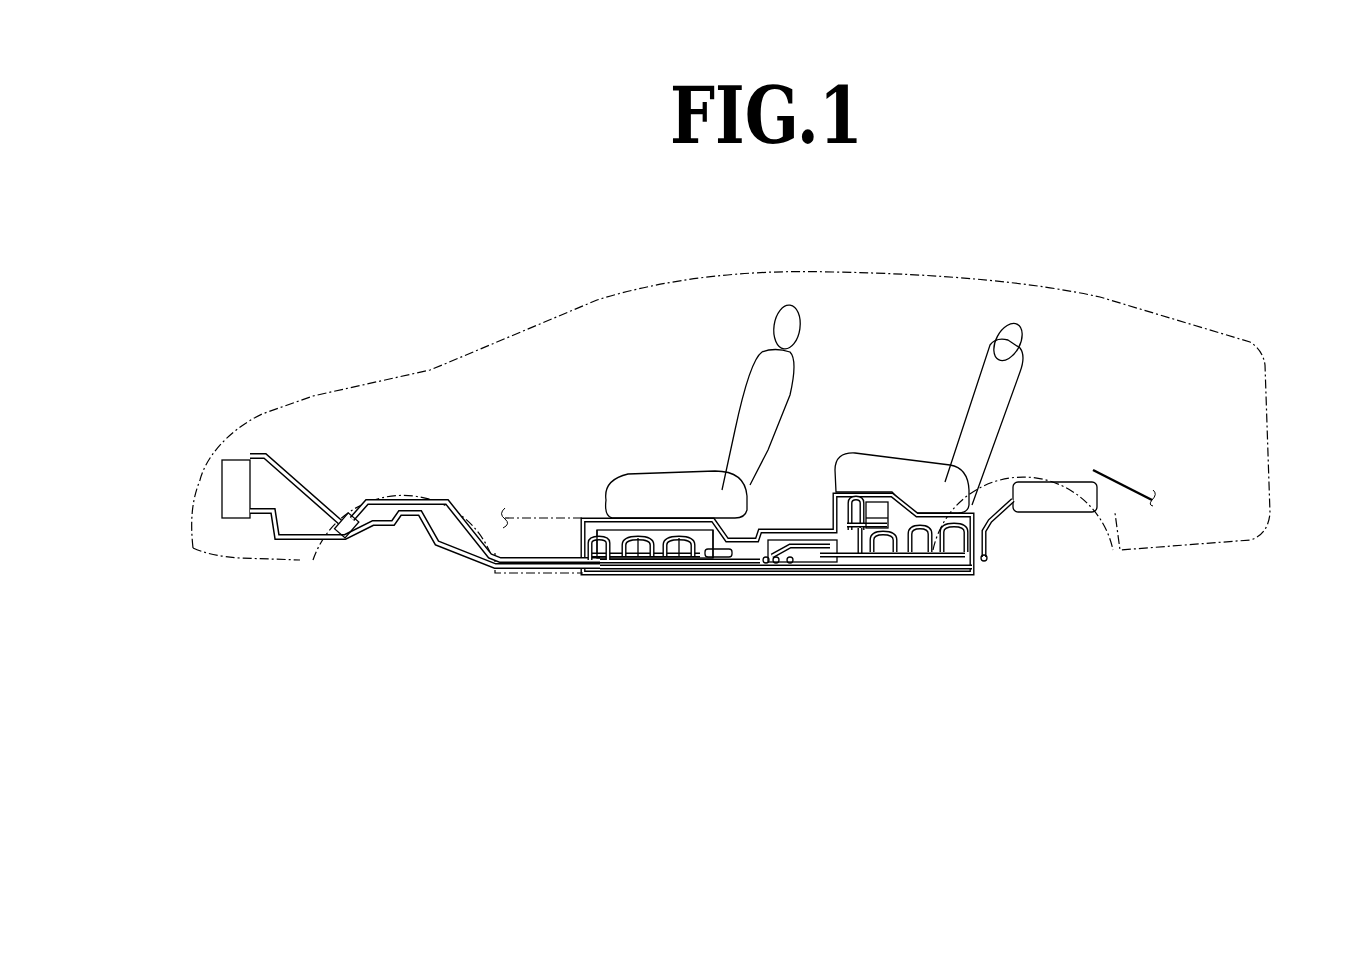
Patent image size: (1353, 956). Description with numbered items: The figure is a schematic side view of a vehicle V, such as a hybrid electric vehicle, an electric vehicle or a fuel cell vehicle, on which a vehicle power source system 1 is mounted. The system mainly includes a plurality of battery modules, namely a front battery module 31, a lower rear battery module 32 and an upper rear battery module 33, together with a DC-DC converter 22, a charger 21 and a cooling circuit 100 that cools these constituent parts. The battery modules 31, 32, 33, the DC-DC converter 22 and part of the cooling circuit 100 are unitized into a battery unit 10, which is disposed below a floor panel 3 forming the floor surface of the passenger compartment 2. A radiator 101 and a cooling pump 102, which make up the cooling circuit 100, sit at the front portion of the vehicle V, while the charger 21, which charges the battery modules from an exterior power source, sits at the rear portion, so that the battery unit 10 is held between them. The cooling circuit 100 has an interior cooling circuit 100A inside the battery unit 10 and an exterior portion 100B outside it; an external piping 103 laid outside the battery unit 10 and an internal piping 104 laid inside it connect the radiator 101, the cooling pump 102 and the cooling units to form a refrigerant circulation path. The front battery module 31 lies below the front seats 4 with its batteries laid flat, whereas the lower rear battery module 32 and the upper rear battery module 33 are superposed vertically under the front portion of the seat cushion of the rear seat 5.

The vehicle V is at (1050, 252).
The vehicle power source system 1 is at (888, 325).
The passenger compartment 2 is at (866, 395).
The floor panel 3 is at (750, 521).
The front seats 4 is at (668, 471).
The rear seat 5 is at (913, 457).
The battery unit 10 is at (783, 567).
The charger 21 is at (1058, 482).
The DC-DC converter 22 is at (830, 530).
The front battery module 31 is at (658, 563).
The lower rear battery module 32 is at (913, 565).
The upper rear battery module 33 is at (872, 507).
The cooling circuit 100 is at (498, 653).
The interior cooling circuit 100A is at (615, 571).
The second battery module 100B is at (535, 573).
The radiator 101 is at (232, 488).
The cooling pump 102 is at (353, 547).
The external piping 103 is at (450, 558).
The internal piping 104 is at (735, 562).